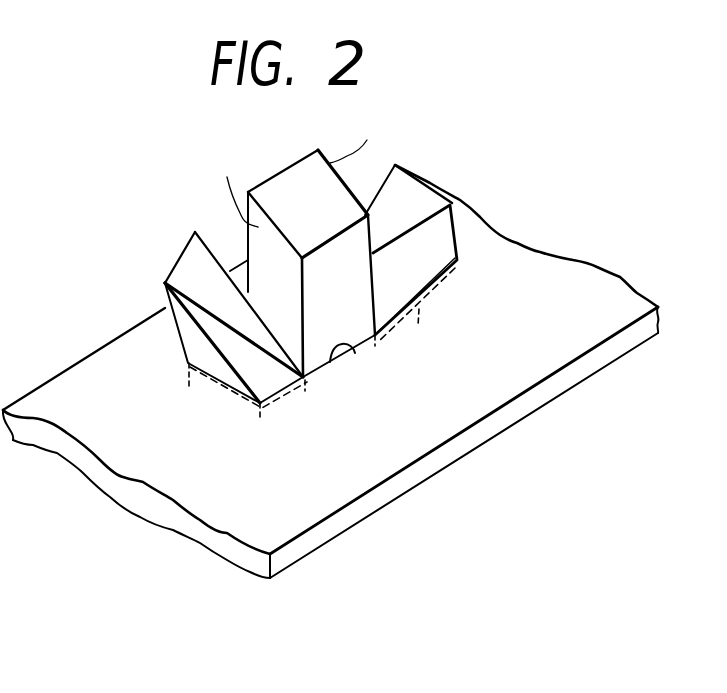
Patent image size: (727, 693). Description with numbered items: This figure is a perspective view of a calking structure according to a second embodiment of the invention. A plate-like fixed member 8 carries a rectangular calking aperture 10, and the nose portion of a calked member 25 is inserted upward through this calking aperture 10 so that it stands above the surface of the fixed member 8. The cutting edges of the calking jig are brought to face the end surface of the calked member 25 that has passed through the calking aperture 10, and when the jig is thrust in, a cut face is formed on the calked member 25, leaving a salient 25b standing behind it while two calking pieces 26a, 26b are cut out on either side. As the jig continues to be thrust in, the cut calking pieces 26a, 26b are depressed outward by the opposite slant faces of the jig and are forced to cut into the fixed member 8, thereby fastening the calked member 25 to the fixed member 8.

The fixed member 8 is at (593, 287).
The calked member 25 is at (230, 240).
The salient 25b is at (410, 173).
The calking piece 26a is at (179, 254).
The calking piece 26b is at (413, 230).
The calking aperture 10 is at (340, 356).